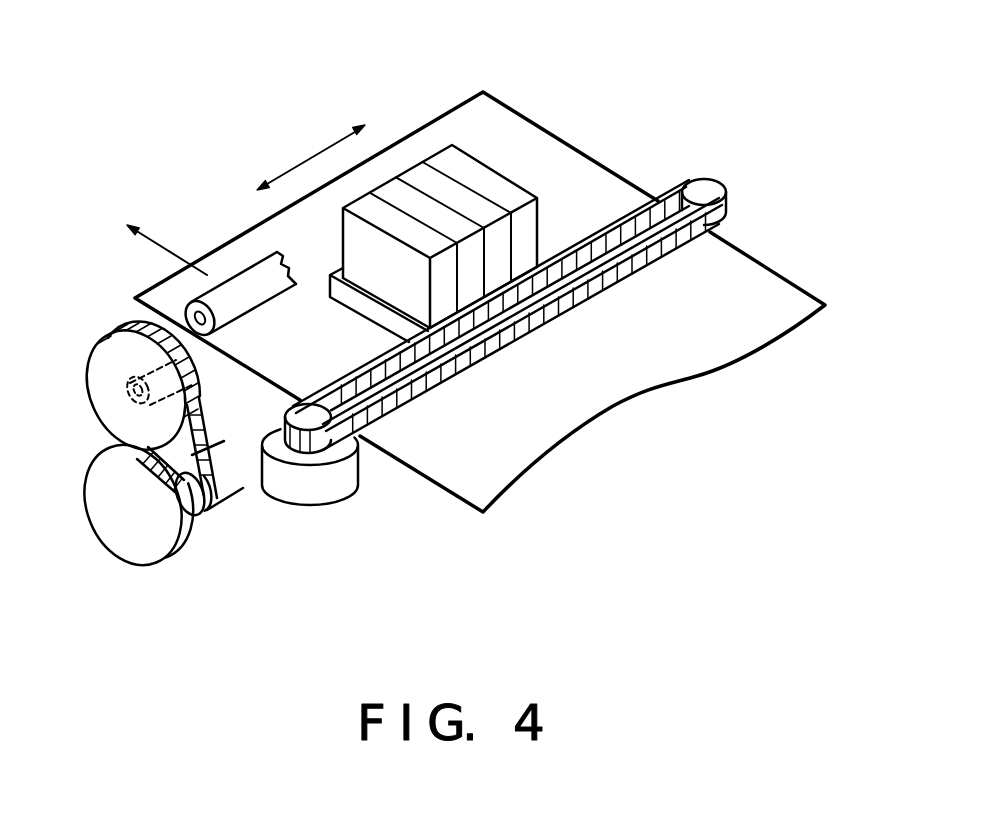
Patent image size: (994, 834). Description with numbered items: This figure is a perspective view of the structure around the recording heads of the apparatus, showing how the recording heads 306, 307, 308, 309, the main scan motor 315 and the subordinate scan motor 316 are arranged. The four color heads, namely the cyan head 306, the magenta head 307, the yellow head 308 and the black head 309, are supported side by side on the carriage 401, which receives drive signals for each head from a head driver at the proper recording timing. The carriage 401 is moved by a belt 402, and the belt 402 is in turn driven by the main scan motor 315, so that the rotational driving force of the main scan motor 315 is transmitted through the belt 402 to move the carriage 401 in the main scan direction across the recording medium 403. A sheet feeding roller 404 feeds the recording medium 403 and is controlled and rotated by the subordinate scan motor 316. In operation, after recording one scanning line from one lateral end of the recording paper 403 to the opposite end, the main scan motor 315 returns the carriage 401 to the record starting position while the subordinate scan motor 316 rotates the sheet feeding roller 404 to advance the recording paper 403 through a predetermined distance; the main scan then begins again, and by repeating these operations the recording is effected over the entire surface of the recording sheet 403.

The cyan head 306 is at (365, 198).
The magenta head 307 is at (405, 175).
The yellow head 308 is at (540, 222).
The black head 309 is at (467, 162).
The main scan motor 315 is at (328, 492).
The subordinate scan motor 316 is at (140, 547).
The carriage 401 is at (330, 281).
The belt 402 is at (728, 212).
The recording medium 403 is at (683, 357).
The sheet feeding roller 404 is at (220, 297).